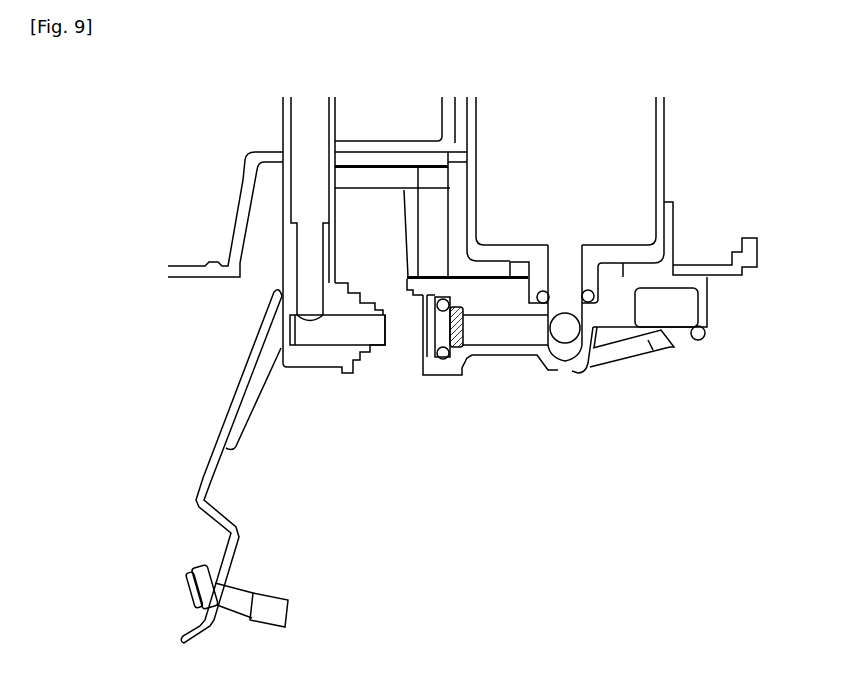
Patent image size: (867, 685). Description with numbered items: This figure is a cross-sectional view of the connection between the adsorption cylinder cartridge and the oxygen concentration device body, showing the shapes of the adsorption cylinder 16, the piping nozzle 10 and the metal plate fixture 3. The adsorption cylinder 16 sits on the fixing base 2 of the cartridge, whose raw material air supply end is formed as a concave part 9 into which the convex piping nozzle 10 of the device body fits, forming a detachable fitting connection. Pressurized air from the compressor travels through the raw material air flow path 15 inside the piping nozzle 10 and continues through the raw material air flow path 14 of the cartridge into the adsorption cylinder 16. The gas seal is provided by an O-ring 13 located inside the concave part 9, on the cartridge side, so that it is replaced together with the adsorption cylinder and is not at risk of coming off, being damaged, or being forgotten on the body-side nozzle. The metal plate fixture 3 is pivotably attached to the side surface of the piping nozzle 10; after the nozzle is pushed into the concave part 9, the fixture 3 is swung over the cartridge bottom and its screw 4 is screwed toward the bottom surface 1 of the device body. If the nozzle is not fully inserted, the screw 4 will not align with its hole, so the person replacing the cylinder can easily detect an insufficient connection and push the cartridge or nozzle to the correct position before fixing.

The bottom surface of oxygen concentration device body 1 is at (218, 268).
The fixing base of adsorption cylinder cartridge 2 is at (623, 303).
The metal plate fixture 3 is at (202, 475).
The screw 4 is at (285, 618).
The concave part of raw material air supply end 9 is at (425, 348).
The piping nozzle for supplying raw material air of oxygen concentration device body 10 is at (343, 357).
The O-ring 13 is at (443, 355).
The raw material air flow path for adsorption cylinder cartridge 14 is at (503, 323).
The raw material air flow path for piping nozzle supplying raw material air of oxyge 15 is at (333, 322).
The adsorption cylinder 16 is at (622, 135).